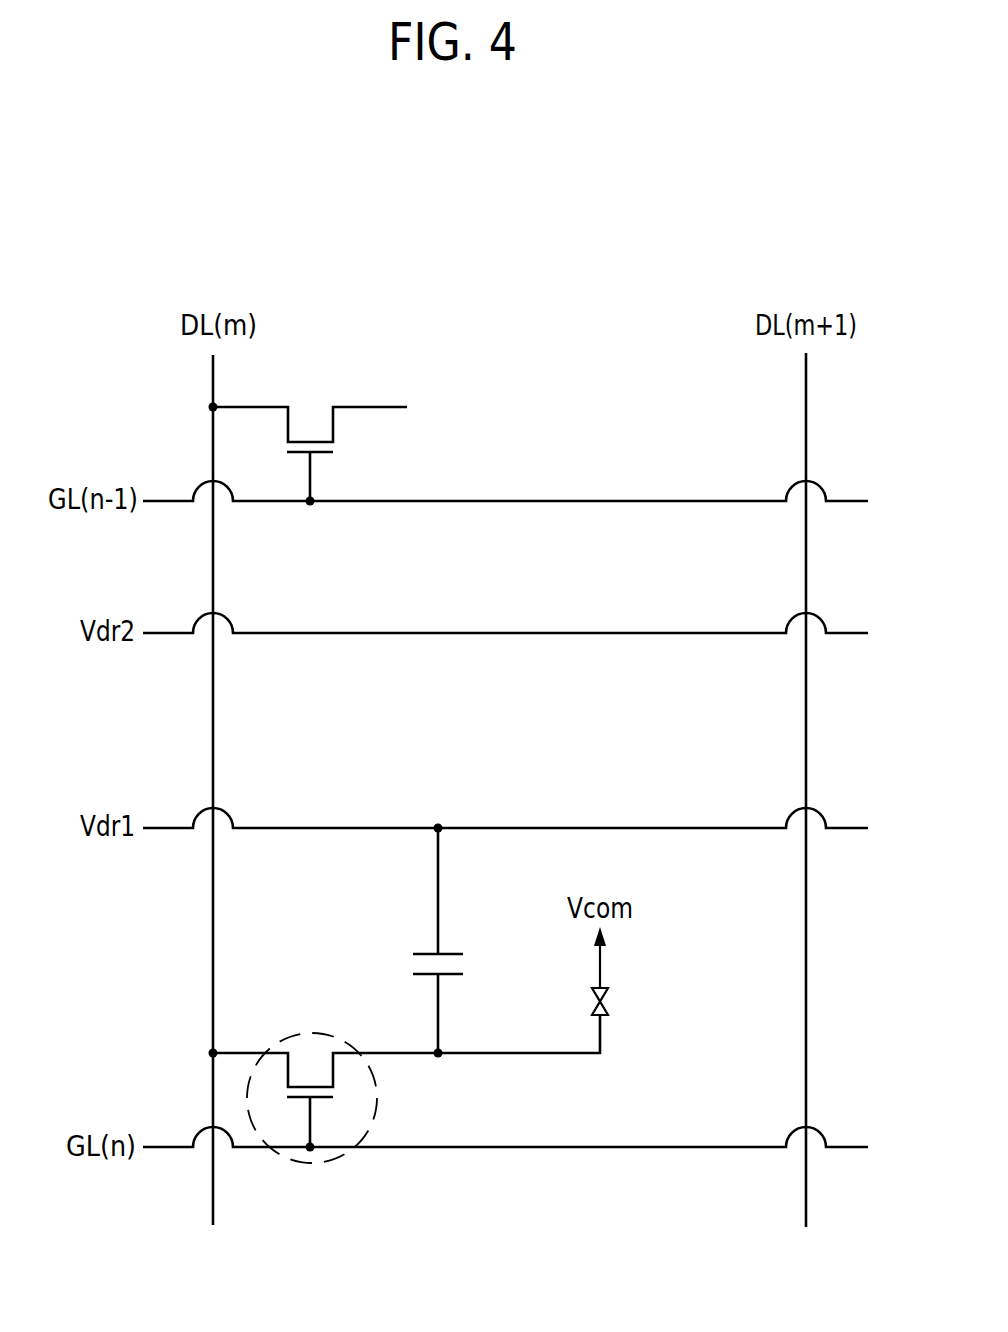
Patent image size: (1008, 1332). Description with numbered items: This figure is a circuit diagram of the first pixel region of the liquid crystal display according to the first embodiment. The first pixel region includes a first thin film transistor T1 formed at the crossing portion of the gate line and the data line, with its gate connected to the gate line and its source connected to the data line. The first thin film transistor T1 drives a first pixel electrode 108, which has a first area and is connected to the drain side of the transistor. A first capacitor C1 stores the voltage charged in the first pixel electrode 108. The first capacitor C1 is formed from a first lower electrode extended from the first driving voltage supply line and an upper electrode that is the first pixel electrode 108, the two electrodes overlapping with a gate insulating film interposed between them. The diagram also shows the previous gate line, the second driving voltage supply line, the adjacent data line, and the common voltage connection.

The first pixel electrode 108 is at (610, 1005).
The first thin film transistor T1 is at (314, 1166).
The first capacitor C1 is at (458, 940).